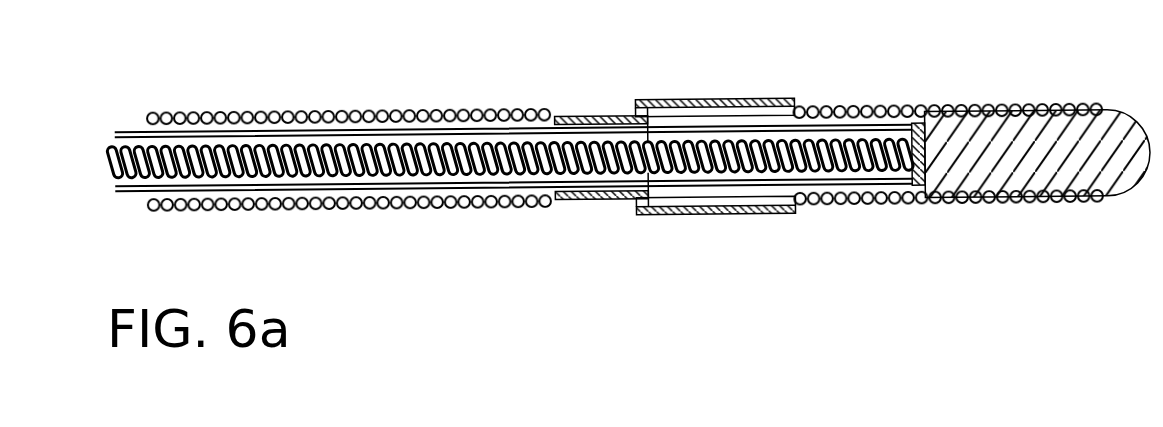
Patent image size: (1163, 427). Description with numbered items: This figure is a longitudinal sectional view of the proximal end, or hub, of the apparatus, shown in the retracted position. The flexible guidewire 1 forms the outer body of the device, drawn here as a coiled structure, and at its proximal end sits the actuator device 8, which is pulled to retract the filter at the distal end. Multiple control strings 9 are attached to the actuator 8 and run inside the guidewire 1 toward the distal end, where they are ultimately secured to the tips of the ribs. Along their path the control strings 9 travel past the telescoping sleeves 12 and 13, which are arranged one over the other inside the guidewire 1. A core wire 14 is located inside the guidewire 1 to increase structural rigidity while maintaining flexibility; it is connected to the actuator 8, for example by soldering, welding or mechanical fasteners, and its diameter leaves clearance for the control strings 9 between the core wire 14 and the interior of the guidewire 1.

The guidewire 1 is at (268, 120).
The actuator device 8 is at (963, 105).
The control strings 9 is at (130, 130).
The telescoping sleeve 12 is at (585, 117).
The telescoping sleeve 13 is at (753, 100).
The core wire 14 is at (378, 142).